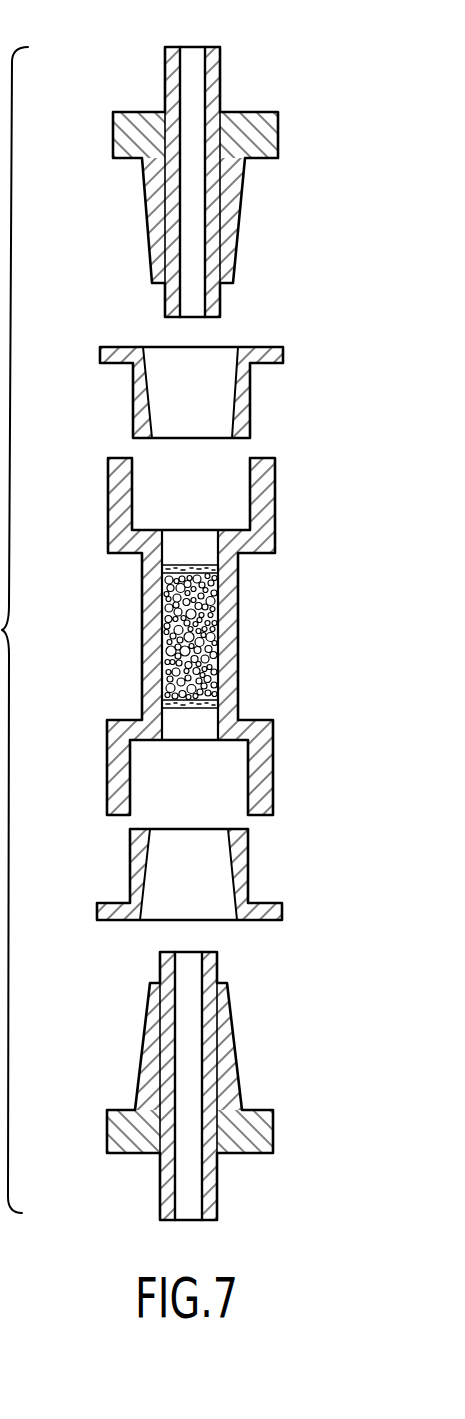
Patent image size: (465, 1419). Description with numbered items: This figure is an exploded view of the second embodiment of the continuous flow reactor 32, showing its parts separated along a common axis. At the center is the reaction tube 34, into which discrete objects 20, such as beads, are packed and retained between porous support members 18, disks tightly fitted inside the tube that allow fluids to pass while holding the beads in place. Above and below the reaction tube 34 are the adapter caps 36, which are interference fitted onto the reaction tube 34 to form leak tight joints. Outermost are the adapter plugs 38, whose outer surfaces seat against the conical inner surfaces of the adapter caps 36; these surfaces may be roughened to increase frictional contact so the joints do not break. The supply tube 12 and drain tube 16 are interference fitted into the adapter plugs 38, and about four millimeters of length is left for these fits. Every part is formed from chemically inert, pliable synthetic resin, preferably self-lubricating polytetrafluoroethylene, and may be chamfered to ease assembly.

The supply tube 12 is at (213, 60).
The drain tube 16 is at (213, 1203).
The porous support member 18 is at (213, 567).
The discrete objects 20 is at (168, 633).
The continuous flow reactor 32 is at (332, 625).
The reaction tube 34 is at (230, 687).
The adapter cap 36 is at (245, 412).
The adapter plug 38 is at (278, 133).